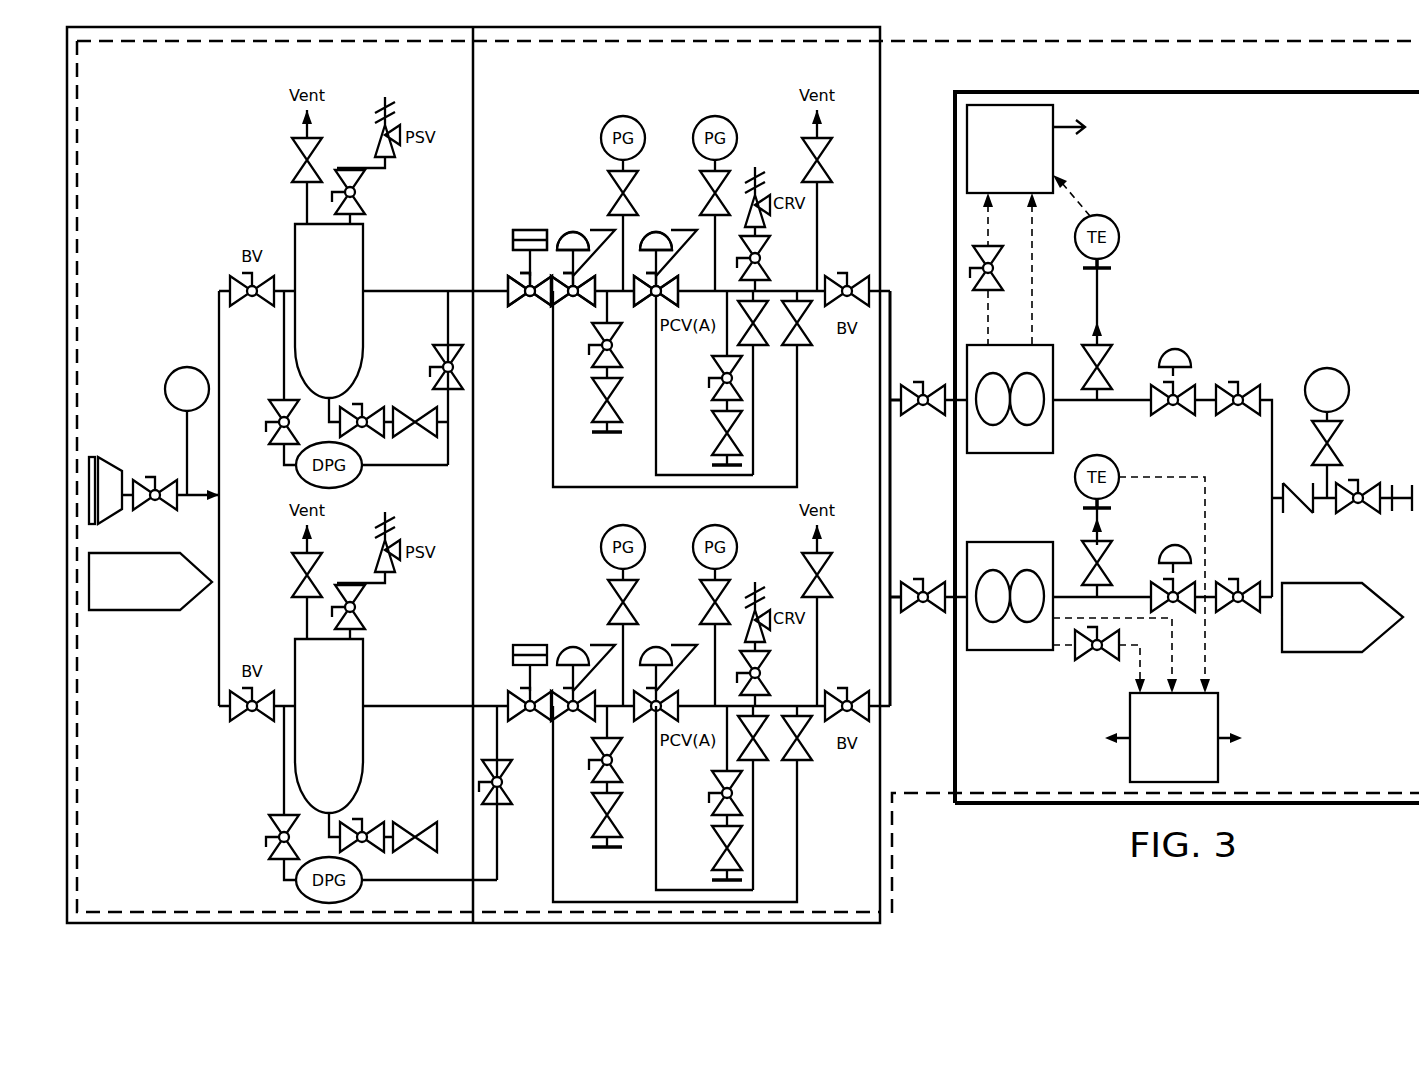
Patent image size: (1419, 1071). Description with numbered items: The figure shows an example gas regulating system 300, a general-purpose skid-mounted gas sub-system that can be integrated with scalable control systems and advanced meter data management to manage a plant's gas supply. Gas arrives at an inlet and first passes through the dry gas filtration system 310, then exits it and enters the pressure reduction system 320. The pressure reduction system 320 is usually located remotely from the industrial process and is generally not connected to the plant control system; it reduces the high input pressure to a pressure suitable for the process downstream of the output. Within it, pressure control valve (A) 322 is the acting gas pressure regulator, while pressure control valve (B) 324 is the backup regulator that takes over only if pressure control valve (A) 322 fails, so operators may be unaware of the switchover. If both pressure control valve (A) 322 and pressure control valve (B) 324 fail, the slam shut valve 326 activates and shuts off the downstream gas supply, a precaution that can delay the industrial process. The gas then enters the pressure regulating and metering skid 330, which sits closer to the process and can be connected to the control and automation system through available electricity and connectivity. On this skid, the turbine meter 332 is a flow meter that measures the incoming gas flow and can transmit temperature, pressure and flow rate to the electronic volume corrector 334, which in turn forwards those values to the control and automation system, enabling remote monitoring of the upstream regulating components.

The gas regulating system 300 is at (933, 847).
The dry gas filtration system 310 is at (152, 189).
The pressure reduction system 320 is at (543, 96).
The pressure control valve (A) 322 is at (657, 229).
The pressure control valve (B) 324 is at (571, 229).
The slam shut valve 326 is at (517, 229).
The pressure regulating and metering skid 330 is at (1252, 271).
The turbine meter 332 is at (1053, 410).
The electronic volume corrector (EVC) 334 is at (992, 182).